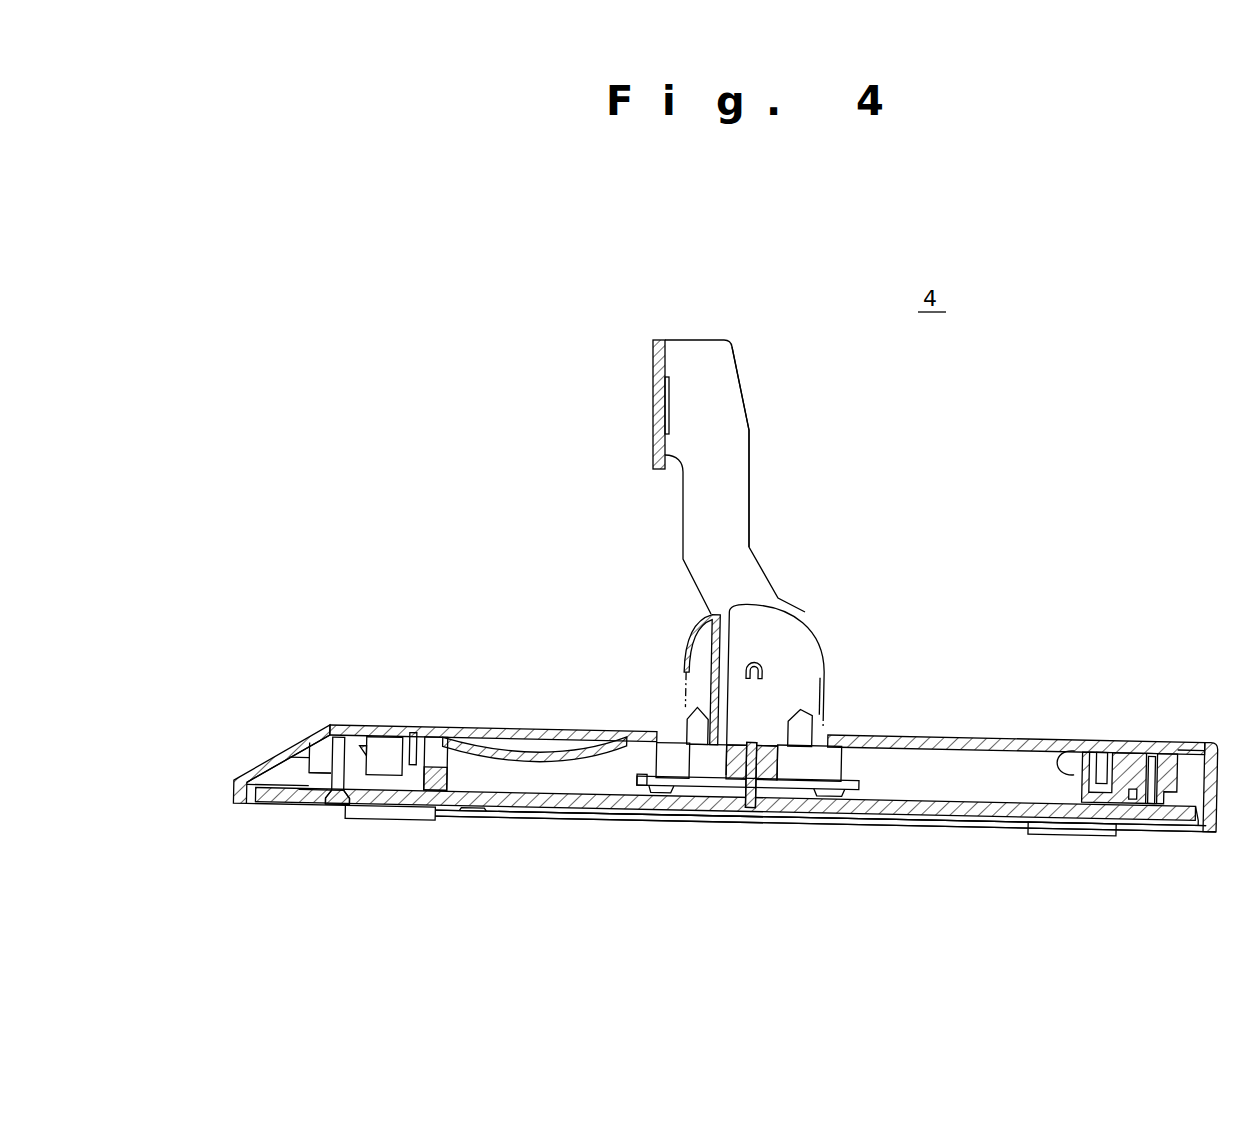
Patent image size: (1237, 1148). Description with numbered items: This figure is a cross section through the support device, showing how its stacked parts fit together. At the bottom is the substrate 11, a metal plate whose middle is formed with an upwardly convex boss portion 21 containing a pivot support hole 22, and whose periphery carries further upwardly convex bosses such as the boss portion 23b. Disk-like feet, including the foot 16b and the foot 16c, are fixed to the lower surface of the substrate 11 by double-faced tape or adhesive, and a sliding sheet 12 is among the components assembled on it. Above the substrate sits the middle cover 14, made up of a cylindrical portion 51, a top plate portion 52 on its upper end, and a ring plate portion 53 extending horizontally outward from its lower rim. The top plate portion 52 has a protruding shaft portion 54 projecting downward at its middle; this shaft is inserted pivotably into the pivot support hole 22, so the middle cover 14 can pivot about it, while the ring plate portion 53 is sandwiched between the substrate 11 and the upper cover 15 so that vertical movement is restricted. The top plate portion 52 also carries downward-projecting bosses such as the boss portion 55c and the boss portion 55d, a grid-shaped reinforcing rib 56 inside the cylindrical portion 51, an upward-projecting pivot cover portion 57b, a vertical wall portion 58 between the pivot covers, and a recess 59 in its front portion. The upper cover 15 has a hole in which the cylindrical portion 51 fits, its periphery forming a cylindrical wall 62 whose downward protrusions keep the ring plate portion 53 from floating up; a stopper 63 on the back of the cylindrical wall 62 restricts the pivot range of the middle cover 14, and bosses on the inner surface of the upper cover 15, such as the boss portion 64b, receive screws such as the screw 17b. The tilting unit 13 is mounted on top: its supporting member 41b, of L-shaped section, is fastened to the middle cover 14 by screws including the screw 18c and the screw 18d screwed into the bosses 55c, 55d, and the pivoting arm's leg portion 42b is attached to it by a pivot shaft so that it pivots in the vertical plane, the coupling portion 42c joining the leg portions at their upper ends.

The substrate 11 is at (940, 822).
The sliding sheet 12 is at (1012, 790).
The tilting unit 13 is at (693, 477).
The middle cover 14 is at (875, 748).
The upper cover 15 is at (325, 725).
The foot 16b is at (410, 820).
The foot 16c is at (1058, 830).
The screw 17b is at (333, 808).
The screw 18c is at (663, 800).
The screw 18d is at (830, 795).
The boss portion 21 is at (710, 812).
The pivot support hole 22 is at (748, 805).
The boss portion 23b is at (320, 797).
The supporting member 41b is at (858, 805).
The leg portion 42b is at (750, 482).
The coupling portion 42c is at (661, 404).
The cylindrical portion 51 is at (1102, 767).
The top plate portion 52 is at (767, 714).
The ring plate portion 53 is at (1152, 779).
The protruding shaft portion 54 is at (758, 810).
The boss portion 55c is at (672, 757).
The boss portion 55d is at (830, 757).
The reinforcing rib 56 is at (445, 740).
The pivot cover portion 57b is at (795, 615).
The vertical wall portion 58 is at (712, 668).
The recess 59 is at (540, 735).
The cylindrical wall 62 is at (378, 735).
The stopper 63 is at (1136, 783).
The boss portion 64b is at (307, 755).